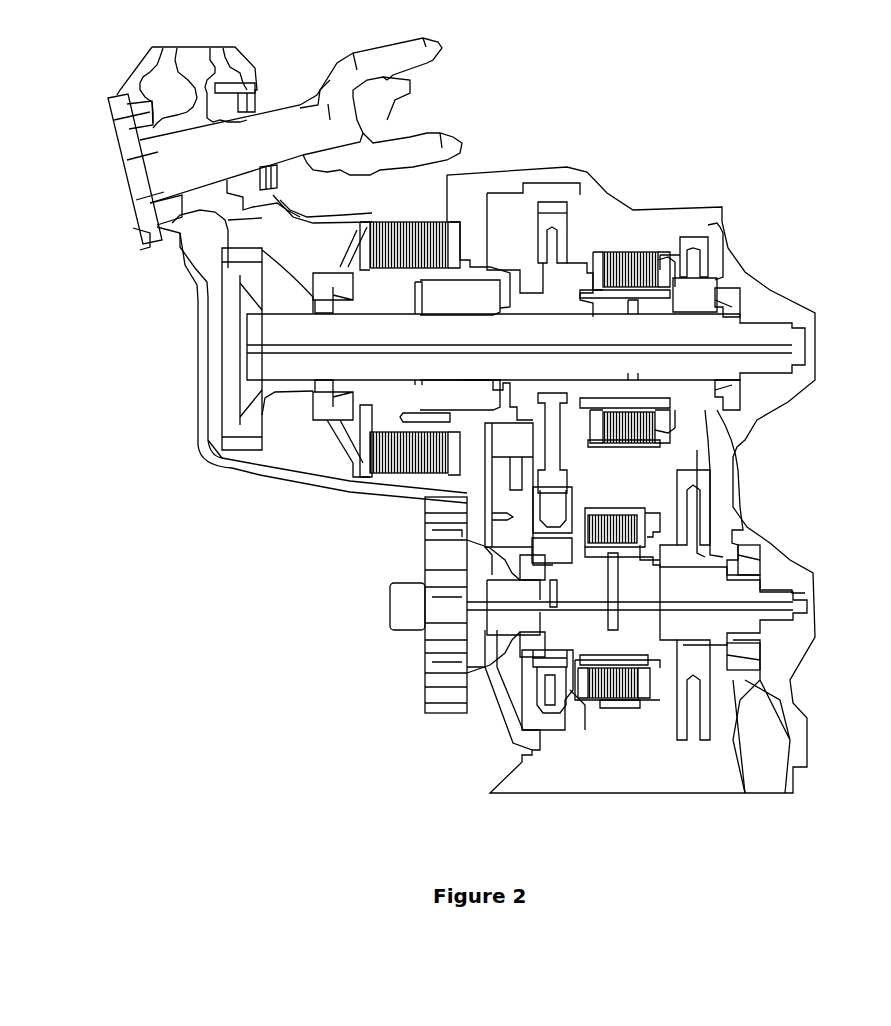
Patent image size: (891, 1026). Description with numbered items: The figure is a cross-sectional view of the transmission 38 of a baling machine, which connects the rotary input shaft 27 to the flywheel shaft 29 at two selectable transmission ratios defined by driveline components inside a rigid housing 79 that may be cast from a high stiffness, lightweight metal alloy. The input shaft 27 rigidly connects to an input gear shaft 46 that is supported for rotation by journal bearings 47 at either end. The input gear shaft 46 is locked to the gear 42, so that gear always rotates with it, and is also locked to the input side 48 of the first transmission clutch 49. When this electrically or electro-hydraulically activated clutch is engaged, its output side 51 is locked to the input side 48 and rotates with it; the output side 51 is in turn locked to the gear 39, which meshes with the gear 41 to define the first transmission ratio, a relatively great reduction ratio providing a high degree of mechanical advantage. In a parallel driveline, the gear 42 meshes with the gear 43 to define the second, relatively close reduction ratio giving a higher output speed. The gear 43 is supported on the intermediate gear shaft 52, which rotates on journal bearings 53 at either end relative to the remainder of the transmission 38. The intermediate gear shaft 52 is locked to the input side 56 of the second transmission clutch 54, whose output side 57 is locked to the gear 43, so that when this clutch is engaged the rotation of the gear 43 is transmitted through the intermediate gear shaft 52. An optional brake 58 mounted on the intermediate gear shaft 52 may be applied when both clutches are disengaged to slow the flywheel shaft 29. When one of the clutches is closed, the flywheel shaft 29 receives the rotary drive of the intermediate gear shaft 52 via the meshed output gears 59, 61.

The rotary input shaft 27 is at (400, 605).
The flywheel shaft 29 is at (273, 123).
The transmission 38 is at (293, 485).
The toothed gear 39 is at (550, 712).
The toothed gear 41 is at (553, 218).
The toothed gear 42 is at (690, 510).
The toothed gear 43 is at (693, 257).
The input gear shaft 46 is at (753, 582).
The journal bearings 47 is at (437, 685).
The input side of first transmission clutch 48 is at (613, 700).
The first transmission clutch 49 is at (590, 700).
The output side of first transmission clutch 51 is at (583, 698).
The intermediate gear shaft 52 is at (255, 337).
The journal bearings 53 is at (342, 398).
The second transmission clutch 54 is at (633, 253).
The input side of second transmission clutch 56 is at (625, 250).
The output side of second transmission clutch 57 is at (662, 253).
The brake 58 is at (444, 222).
The output gear 59 is at (235, 430).
The output gear 61 is at (230, 233).
The rigid housing 79 is at (185, 275).